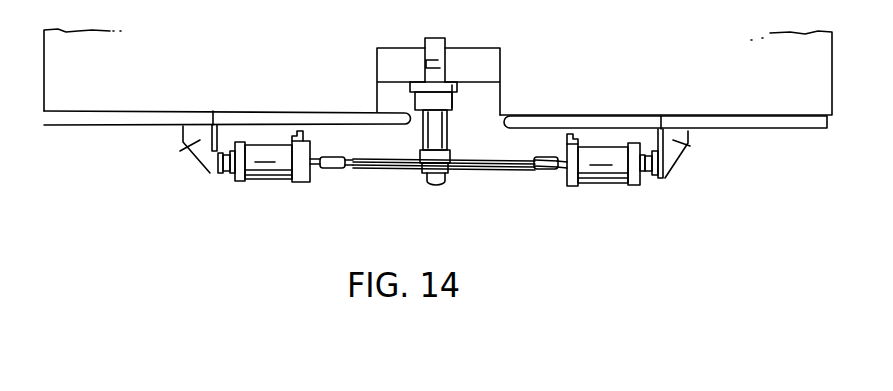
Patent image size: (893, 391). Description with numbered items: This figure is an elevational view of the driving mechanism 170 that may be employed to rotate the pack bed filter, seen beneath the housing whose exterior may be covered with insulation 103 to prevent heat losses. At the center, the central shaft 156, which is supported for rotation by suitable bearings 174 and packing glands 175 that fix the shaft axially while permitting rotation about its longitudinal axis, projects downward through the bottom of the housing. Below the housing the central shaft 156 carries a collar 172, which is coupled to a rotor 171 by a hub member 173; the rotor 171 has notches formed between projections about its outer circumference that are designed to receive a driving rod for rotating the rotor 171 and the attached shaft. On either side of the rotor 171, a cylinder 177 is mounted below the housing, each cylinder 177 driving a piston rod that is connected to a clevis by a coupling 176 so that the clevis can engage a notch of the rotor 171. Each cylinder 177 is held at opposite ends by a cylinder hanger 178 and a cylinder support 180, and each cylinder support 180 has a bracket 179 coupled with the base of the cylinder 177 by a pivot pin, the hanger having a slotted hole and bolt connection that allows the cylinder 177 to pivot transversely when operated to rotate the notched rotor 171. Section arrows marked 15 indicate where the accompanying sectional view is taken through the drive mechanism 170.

The insulation 103 is at (777, 130).
The central shaft 156 is at (452, 126).
The driving mechanism 170 is at (450, 163).
The rotor 171 is at (510, 172).
The collar 172 is at (452, 149).
The hub member 173 is at (424, 185).
The bearings 174 is at (418, 125).
The packing glands 175 is at (426, 72).
The coupling 176 is at (341, 172).
The cylinder 177 is at (262, 143).
The cylinder hanger 178 is at (298, 131).
The bracket 179 is at (214, 172).
The cylinder support 180 is at (180, 151).
The section line 15 is at (67, 178).